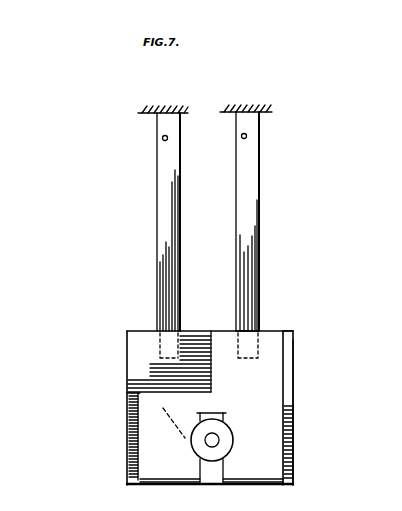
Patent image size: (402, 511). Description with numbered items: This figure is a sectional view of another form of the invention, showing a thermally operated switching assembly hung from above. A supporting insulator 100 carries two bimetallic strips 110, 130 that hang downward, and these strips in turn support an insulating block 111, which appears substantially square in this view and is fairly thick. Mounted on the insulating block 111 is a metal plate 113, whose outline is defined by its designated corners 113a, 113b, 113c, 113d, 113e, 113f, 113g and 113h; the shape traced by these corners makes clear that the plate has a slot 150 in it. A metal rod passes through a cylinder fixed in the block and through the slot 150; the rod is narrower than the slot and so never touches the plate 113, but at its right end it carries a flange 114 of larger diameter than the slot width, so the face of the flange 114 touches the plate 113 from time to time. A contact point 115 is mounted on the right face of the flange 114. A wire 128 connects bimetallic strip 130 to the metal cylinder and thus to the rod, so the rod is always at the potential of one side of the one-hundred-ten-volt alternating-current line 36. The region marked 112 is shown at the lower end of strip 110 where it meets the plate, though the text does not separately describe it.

The supporting insulator 100 is at (205, 100).
The A. C. line 36 is at (130, 138).
The bimetallic strip 130 is at (160, 197).
The bimetallic strip 110 is at (250, 221).
The lower end of first link 112 is at (262, 332).
The metal plate 113 is at (285, 377).
The corner of plate 113a is at (294, 331).
The insulating block 111 is at (296, 397).
The corner of plate 113b is at (295, 485).
The corner of plate 113g is at (143, 495).
The corner of plate 113h is at (147, 395).
The wire 128 is at (167, 406).
The corner of plate 113e is at (201, 412).
The corner of plate 113d is at (226, 414).
The slot 150 is at (222, 408).
The flange 114 is at (228, 428).
The contact point 115 is at (216, 441).
The corner of plate 113f is at (200, 485).
The corner of plate 113c is at (226, 484).